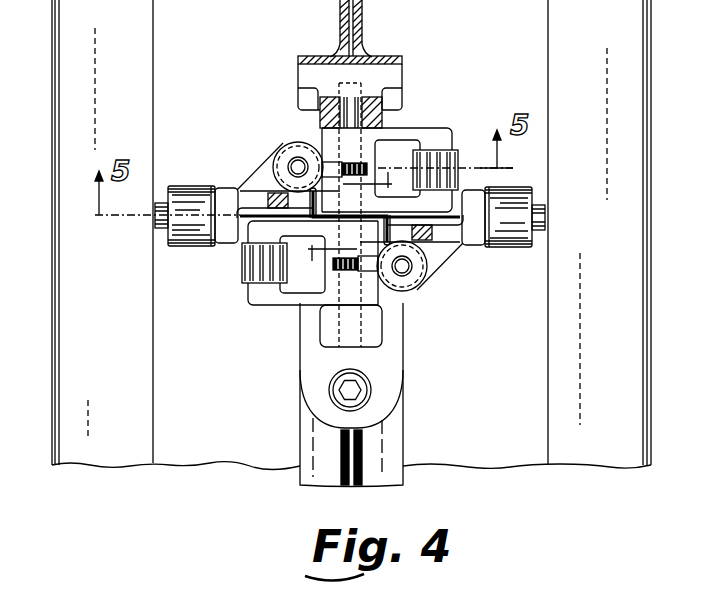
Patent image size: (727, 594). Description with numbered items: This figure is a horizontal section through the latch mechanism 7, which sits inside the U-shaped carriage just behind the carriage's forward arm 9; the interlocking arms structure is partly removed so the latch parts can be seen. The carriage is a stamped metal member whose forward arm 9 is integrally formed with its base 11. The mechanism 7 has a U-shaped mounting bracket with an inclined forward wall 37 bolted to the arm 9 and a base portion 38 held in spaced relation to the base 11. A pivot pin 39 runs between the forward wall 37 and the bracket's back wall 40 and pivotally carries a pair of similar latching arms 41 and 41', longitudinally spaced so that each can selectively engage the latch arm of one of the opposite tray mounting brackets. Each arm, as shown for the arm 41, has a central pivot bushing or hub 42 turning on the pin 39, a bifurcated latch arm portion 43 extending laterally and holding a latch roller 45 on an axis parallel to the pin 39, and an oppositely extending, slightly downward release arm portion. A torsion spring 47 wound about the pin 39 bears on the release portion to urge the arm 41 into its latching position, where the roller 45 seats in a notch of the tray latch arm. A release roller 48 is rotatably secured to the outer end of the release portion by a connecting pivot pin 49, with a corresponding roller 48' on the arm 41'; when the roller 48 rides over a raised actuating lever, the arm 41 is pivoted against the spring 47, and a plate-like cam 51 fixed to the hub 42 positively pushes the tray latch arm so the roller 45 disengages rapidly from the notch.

The forward arm 9 is at (368, 23).
The inclined forward wall 37 is at (310, 72).
The pivot pin 39 is at (358, 114).
The central pivot bushing or hub 42 is at (326, 137).
The latch arm portion 43 is at (410, 134).
The latch roller 45 is at (457, 154).
The cam 51 is at (366, 168).
The latching arm 41 is at (277, 188).
The latching arm 41' is at (426, 242).
The torsion spring 47 is at (327, 219).
The release roller 48 is at (191, 236).
The release roller 48' is at (515, 239).
The connecting pivot pin 49 is at (157, 221).
The latch mechanism 7 is at (449, 291).
The back wall 40 is at (325, 322).
The base portion 38 is at (388, 374).
The base 11 is at (394, 443).